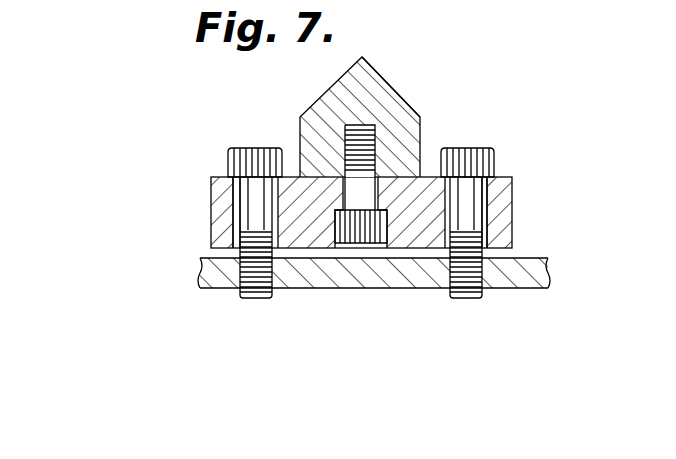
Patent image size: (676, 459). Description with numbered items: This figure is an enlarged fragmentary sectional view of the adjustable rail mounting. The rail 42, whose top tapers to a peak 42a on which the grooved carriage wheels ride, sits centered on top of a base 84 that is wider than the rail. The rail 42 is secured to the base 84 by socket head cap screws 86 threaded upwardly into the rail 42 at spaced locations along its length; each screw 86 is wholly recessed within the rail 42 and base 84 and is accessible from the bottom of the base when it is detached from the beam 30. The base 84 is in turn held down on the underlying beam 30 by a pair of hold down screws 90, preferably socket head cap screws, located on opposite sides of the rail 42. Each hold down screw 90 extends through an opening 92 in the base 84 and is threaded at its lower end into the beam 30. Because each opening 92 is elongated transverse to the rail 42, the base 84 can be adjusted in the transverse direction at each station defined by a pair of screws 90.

The beam 30 is at (537, 268).
The rail 42 is at (408, 132).
The peak 42a is at (362, 65).
The base 84 is at (300, 193).
The socket head cap screw 86 is at (360, 163).
The hold down screw 90 is at (252, 225).
The opening 92 is at (240, 192).